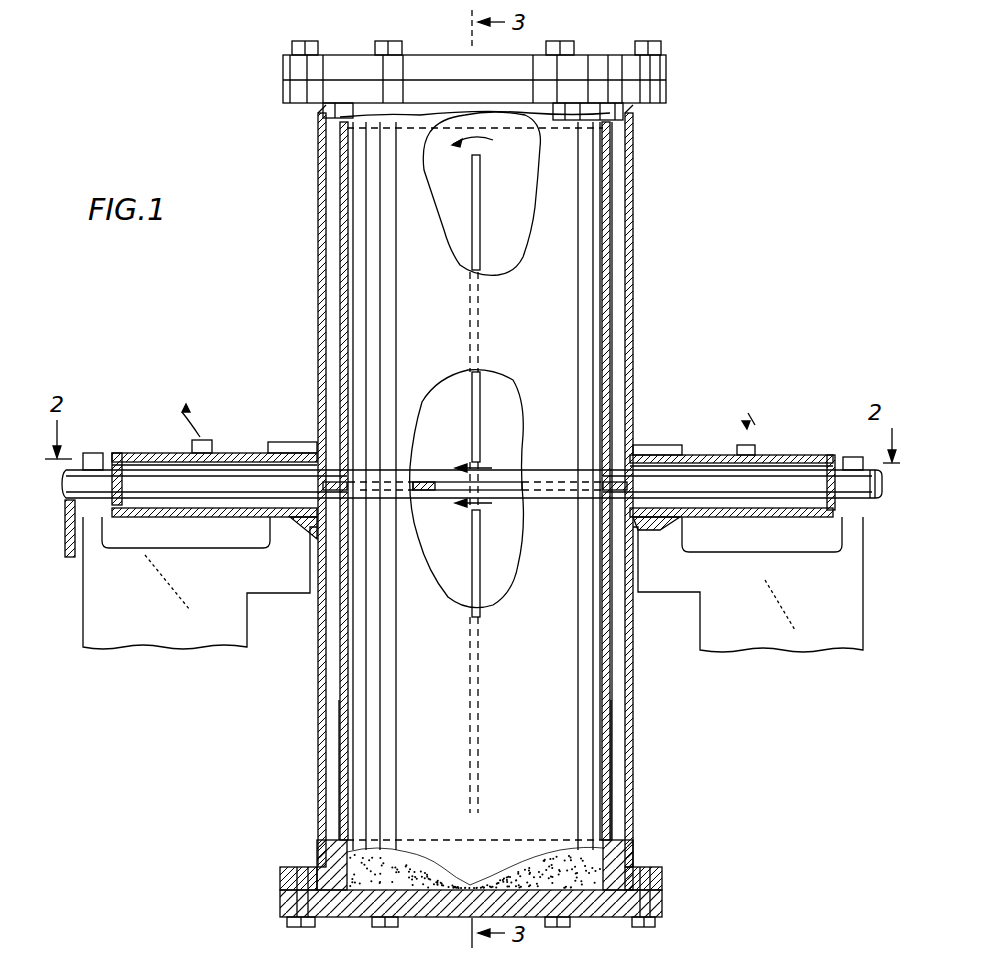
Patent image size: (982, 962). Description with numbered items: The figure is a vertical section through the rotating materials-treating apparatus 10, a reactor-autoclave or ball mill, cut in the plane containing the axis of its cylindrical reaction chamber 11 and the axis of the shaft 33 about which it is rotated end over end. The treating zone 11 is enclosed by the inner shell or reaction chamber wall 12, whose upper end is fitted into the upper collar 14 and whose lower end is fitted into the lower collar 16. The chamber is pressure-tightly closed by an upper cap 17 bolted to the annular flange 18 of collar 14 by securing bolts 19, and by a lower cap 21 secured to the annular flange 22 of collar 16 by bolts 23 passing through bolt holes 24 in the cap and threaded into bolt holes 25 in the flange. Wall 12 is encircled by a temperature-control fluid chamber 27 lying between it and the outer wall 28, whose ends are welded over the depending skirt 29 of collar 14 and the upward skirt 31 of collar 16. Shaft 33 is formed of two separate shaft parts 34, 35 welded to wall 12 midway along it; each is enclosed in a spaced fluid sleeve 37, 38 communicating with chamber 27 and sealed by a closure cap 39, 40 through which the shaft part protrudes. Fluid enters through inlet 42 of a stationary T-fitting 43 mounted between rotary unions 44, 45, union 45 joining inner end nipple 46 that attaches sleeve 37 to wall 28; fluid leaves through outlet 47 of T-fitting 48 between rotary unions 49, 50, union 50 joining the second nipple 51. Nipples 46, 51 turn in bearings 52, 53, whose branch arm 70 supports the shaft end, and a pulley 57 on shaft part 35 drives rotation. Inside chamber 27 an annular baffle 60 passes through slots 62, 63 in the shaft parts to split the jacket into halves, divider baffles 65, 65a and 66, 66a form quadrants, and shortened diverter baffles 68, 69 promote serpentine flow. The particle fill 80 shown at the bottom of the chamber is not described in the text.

The rotating materials-treating apparatus 10 is at (652, 370).
The reaction chamber 11 is at (545, 301).
The cylindrical reaction chamber wall 12 is at (610, 262).
The upper collar 14 is at (413, 92).
The lower collar 16 is at (634, 868).
The upper cap 17 is at (353, 65).
The annular flange 18 is at (300, 103).
The securing bolts 19 is at (661, 48).
The lower cap 21 is at (415, 918).
The annular flange 22 is at (282, 870).
The bolts 23 is at (308, 927).
The bolt holes 24 is at (297, 897).
The bolt holes 25 is at (664, 878).
The temperature-control fluid chamber 27 is at (505, 549).
The temperature-control fluid chamber outer wall 28 is at (633, 196).
The annularly depending skirt 29 is at (411, 117).
The upwardly extending annular skirt 31 is at (325, 851).
The shaft 33 is at (880, 496).
The shaft part 34 is at (818, 490).
The shaft part 35 is at (92, 484).
The temperature-control fluid sleeve 37 is at (818, 453).
The temperature-control fluid sleeve 38 is at (136, 452).
The closure cap 39 is at (837, 442).
The closure cap 40 is at (140, 452).
The temperature-control fluid inlet 42 is at (765, 446).
The stationary T-fitting 43 is at (750, 517).
The rotary union 44 is at (778, 458).
The rotary union 45 is at (710, 455).
The inner end nipple 46 is at (662, 446).
The temperature-control fluid outlet 47 is at (214, 440).
The stationary T-fitting 48 is at (200, 518).
The rotary union 49 is at (175, 453).
The rotary union 50 is at (233, 453).
The inner end nipple 51 is at (290, 445).
The bearing 52 is at (680, 532).
The bearing 53 is at (288, 524).
The pulley 57 is at (68, 555).
The annular baffle 60 is at (438, 492).
The slot 62 is at (628, 486).
The slot 63 is at (320, 486).
The vertical divider baffle 65 is at (642, 296).
The vertical divider baffle 65a is at (618, 680).
The divider baffle 66 is at (330, 250).
The divider baffle 66a is at (330, 720).
The flow diverter baffle 68 is at (480, 191).
The flow diverter baffle 69 is at (472, 597).
The branch arm 70 is at (102, 530).
The particle bed 80 is at (586, 876).